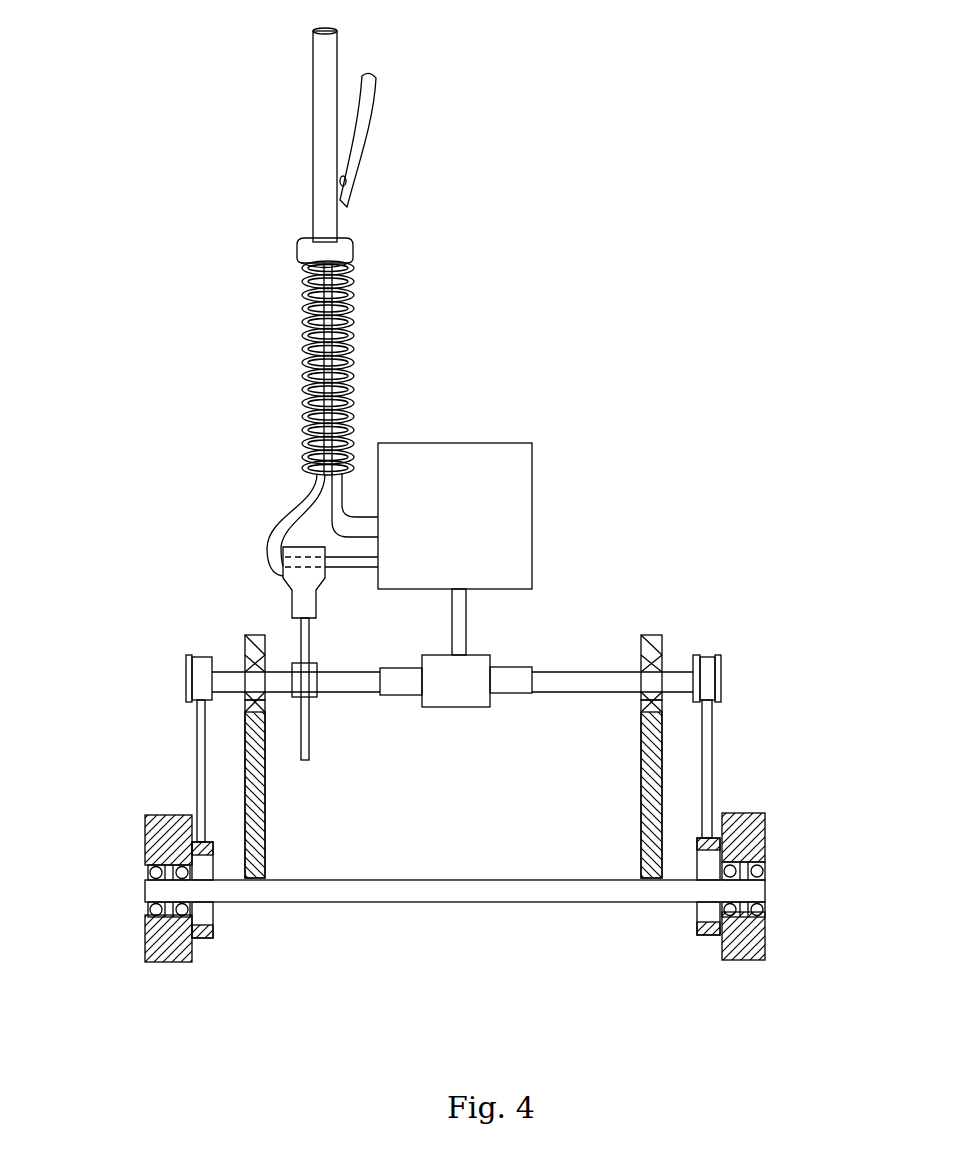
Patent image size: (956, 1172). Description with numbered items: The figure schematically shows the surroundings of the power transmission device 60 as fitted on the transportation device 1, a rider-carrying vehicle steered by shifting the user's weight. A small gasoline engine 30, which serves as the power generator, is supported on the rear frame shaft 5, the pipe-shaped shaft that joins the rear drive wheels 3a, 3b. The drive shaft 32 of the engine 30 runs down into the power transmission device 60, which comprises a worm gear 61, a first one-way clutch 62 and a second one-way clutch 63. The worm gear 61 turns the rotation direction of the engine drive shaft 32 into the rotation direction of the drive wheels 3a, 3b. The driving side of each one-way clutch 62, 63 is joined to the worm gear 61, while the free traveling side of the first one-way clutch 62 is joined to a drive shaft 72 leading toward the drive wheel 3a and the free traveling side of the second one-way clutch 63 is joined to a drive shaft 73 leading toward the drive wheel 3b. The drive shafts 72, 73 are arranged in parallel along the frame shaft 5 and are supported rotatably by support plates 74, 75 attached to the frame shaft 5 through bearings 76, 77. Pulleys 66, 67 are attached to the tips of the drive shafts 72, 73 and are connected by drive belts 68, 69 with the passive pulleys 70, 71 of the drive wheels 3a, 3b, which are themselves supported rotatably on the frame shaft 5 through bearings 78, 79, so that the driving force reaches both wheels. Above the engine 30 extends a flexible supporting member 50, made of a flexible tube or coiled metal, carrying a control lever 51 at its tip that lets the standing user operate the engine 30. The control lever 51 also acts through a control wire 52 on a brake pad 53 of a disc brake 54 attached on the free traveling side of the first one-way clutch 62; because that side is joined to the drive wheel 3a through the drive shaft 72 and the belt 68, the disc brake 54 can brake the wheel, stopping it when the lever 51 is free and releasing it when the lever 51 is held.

The transportation device 1 is at (627, 333).
The rear drive wheel 3a is at (121, 891).
The rear drive wheel 3b is at (791, 856).
The frame shaft 5 is at (415, 890).
The engine 30 is at (505, 470).
The drive shaft 32 is at (463, 622).
The supporting member 50 is at (346, 263).
The control lever 51 is at (366, 122).
The control wire 52 is at (276, 528).
The brake pad 53 is at (279, 568).
The disc brake 54 is at (309, 703).
The power transmission device 60 is at (212, 583).
The worm gear 61 is at (462, 666).
The first one-way clutch 62 is at (402, 693).
The second one-way clutch 63 is at (506, 690).
The pulley 66 is at (186, 680).
The pulley 67 is at (710, 683).
The drive belt 68 is at (201, 732).
The drive belt 69 is at (712, 752).
The passive pulley 70 is at (213, 935).
The passive pulley 71 is at (697, 930).
The drive shaft 72 is at (336, 680).
The drive shaft 73 is at (620, 680).
The support plate 74 is at (259, 745).
The support plate 75 is at (646, 808).
The bearing 76 is at (263, 703).
The bearing 77 is at (660, 652).
The bearing 78 is at (150, 910).
The bearing 79 is at (765, 906).